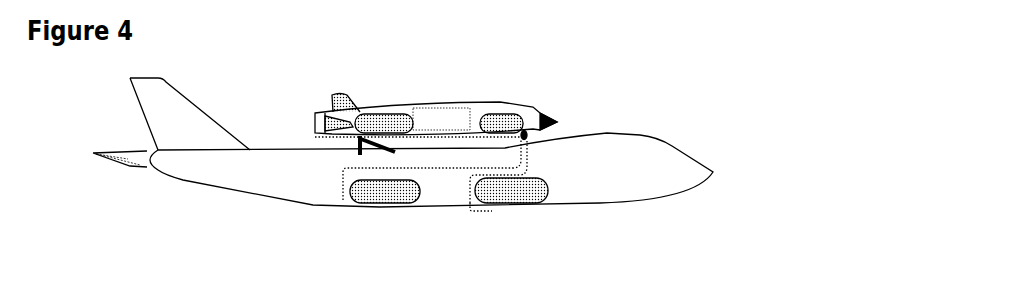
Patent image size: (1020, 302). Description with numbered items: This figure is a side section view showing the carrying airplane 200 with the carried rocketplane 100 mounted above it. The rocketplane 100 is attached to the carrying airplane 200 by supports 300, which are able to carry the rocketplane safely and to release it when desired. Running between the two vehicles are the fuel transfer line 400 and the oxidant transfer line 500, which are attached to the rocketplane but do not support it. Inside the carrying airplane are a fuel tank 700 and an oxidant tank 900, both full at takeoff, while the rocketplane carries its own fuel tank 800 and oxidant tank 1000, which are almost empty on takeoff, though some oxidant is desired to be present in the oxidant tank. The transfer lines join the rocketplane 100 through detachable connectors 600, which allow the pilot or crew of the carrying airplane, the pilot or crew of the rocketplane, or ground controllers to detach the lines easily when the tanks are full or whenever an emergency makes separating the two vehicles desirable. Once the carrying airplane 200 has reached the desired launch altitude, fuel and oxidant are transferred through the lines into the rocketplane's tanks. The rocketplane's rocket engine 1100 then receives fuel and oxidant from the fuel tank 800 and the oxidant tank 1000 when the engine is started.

The rocketplane 100 is at (402, 68).
The carrying airplane 200 is at (623, 138).
The supports 300 is at (353, 148).
The fuel transfer line 400 is at (343, 182).
The oxidant transfer line 500 is at (465, 181).
The detachable connectors 600 is at (528, 137).
The fuel tank 700 is at (533, 204).
The fuel tank 800 is at (540, 67).
The oxidant tank 900 is at (372, 205).
The oxidant tank 1000 is at (377, 110).
The rocket engine 1100 is at (313, 115).